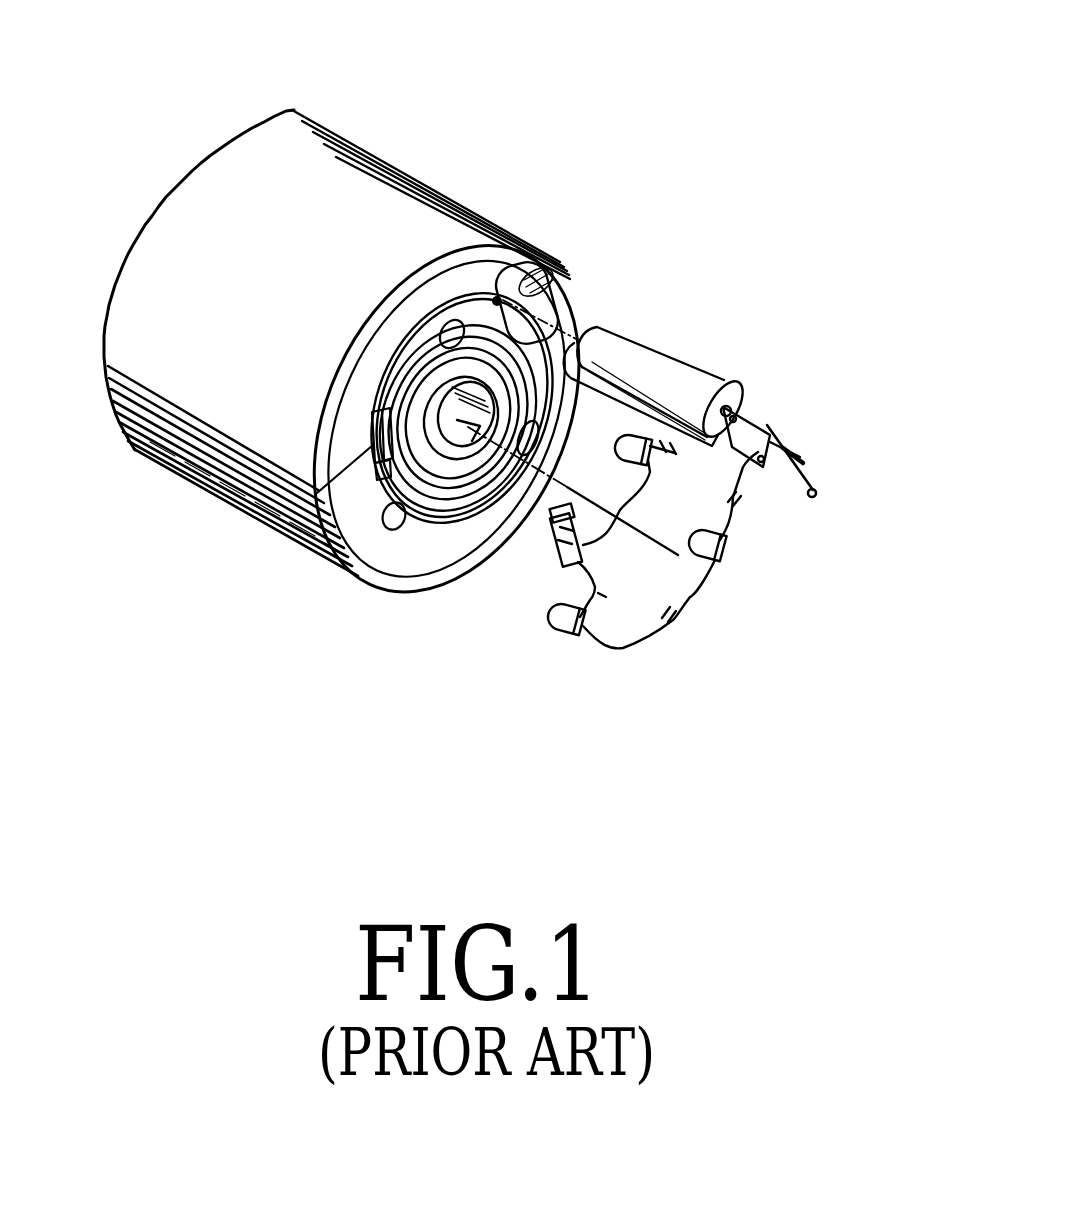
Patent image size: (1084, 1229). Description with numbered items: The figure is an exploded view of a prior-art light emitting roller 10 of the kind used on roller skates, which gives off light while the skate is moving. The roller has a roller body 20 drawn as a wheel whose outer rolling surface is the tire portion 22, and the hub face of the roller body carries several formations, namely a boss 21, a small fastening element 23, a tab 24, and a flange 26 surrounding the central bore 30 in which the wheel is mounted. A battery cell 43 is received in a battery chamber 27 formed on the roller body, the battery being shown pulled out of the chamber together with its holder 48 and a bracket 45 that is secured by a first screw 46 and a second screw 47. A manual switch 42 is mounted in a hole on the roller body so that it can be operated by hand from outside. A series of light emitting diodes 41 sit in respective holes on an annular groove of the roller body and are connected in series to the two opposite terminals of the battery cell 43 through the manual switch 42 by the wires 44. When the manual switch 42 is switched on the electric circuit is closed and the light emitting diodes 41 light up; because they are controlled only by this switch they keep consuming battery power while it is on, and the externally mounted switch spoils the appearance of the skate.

The roller skate wheel 10 is at (424, 310).
The hub 20 is at (476, 306).
The boss 21 is at (390, 530).
The tire 22 is at (280, 545).
The screw 23 is at (501, 297).
The tab 24 is at (373, 523).
The hub flange 26 is at (497, 298).
The battery slot 27 is at (548, 327).
The bearing bore 30 is at (456, 443).
The light bulbs 41 is at (553, 633).
The switch 42 is at (555, 550).
The battery 43 is at (700, 365).
The wires 44 is at (697, 607).
The bracket 45 is at (770, 423).
The screw 46 is at (803, 457).
The screw 47 is at (815, 497).
The battery holder 48 is at (592, 328).